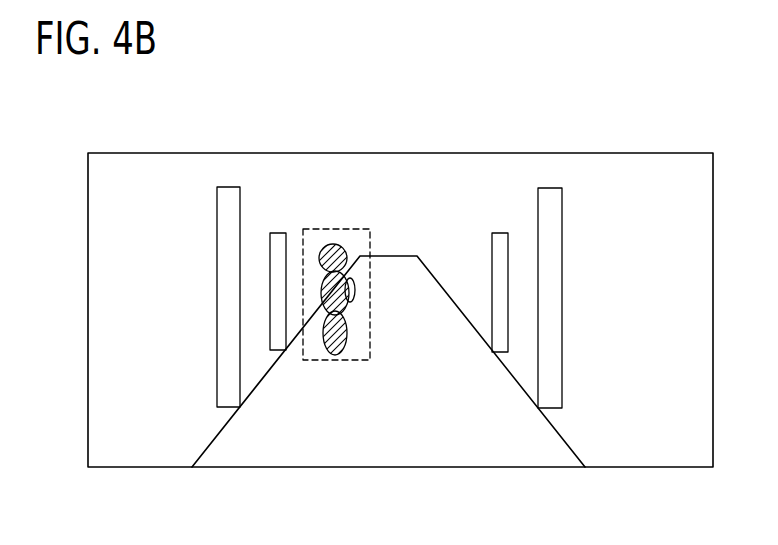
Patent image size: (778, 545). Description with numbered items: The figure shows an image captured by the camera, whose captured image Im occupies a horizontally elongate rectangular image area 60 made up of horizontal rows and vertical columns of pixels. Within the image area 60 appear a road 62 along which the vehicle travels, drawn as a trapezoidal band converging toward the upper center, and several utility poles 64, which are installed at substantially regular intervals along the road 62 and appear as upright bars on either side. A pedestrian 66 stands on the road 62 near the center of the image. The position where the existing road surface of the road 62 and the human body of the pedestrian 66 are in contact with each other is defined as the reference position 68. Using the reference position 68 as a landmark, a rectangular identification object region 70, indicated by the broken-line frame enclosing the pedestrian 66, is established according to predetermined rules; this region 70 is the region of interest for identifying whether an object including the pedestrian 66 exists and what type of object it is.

The original image area 60 is at (480, 153).
The road region 62 is at (417, 468).
The utility pole regions 64 is at (233, 200).
The pedestrian region 66 is at (350, 300).
The reference position 68 is at (335, 361).
The identification object region 70 is at (340, 295).